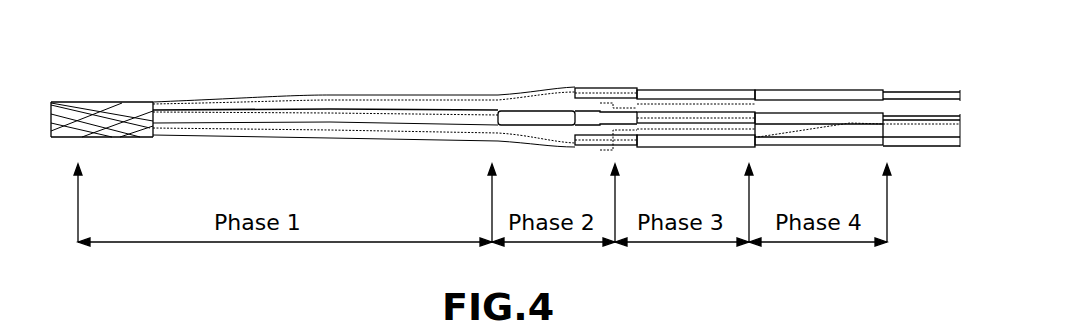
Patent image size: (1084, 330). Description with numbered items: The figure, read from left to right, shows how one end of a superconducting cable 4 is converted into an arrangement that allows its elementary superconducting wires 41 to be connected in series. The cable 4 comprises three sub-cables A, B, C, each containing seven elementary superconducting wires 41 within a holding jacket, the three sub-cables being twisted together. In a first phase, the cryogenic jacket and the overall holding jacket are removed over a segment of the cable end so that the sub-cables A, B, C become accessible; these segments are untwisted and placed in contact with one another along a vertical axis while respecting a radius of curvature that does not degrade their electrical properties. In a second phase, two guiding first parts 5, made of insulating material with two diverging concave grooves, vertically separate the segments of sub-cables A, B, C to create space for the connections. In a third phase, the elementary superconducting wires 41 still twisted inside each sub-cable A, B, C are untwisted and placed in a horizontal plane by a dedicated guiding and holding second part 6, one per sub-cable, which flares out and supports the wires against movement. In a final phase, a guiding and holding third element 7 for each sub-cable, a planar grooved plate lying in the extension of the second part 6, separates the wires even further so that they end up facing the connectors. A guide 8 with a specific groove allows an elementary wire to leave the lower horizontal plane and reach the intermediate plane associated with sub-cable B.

The superconducting cable 4 is at (123, 90).
The sub-cable A is at (420, 97).
The sub-cable B is at (452, 117).
The sub-cable C is at (427, 135).
The guiding first part 5 is at (558, 105).
The guiding and holding second part 6 is at (707, 120).
The guiding and holding third element 7 is at (823, 120).
The guide 8 is at (840, 127).
The elementary superconducting wire 41 is at (930, 120).